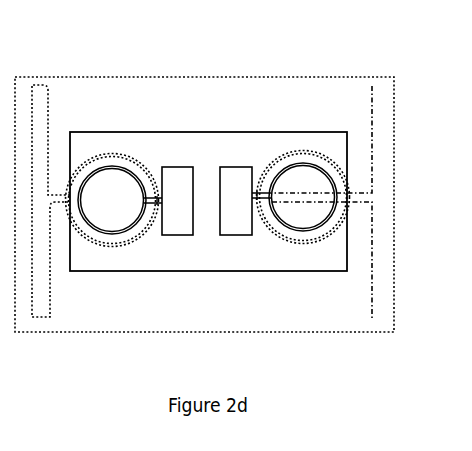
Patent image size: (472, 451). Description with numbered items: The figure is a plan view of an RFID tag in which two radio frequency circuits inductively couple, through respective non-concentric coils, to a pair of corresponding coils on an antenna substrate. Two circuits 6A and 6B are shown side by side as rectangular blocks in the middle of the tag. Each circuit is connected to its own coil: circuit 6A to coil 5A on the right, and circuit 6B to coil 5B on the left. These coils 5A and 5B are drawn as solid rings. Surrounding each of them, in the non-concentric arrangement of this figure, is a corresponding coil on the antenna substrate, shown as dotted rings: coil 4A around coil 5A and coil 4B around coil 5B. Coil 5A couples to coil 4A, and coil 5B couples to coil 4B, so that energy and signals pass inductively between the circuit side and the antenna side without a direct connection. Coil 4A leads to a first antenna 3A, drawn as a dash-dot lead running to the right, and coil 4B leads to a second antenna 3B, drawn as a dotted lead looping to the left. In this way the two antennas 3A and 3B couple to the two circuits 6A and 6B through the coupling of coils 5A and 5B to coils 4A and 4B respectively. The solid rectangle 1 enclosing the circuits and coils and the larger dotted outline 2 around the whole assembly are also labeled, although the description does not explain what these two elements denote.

The substrate 1 is at (125, 277).
The encapsulation 2 is at (295, 74).
The antenna 3A is at (374, 107).
The antenna 3B is at (50, 93).
The coil 4A is at (280, 153).
The coil 4B is at (125, 149).
The coil 5A is at (301, 164).
The coil 5B is at (112, 162).
The circuit 6A is at (238, 237).
The circuit 6B is at (180, 165).